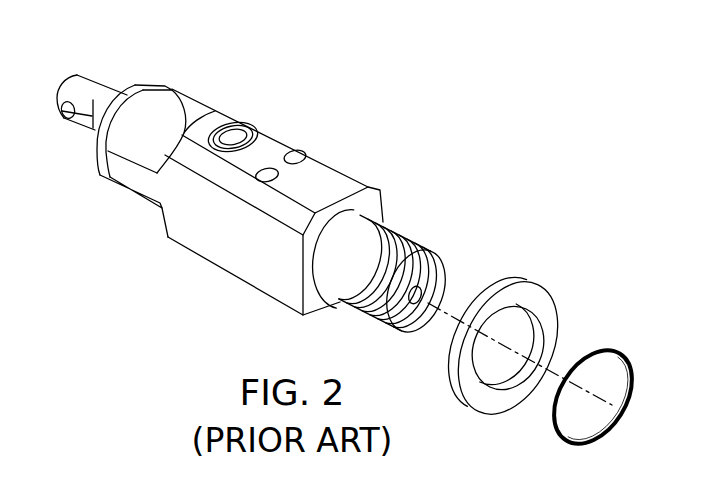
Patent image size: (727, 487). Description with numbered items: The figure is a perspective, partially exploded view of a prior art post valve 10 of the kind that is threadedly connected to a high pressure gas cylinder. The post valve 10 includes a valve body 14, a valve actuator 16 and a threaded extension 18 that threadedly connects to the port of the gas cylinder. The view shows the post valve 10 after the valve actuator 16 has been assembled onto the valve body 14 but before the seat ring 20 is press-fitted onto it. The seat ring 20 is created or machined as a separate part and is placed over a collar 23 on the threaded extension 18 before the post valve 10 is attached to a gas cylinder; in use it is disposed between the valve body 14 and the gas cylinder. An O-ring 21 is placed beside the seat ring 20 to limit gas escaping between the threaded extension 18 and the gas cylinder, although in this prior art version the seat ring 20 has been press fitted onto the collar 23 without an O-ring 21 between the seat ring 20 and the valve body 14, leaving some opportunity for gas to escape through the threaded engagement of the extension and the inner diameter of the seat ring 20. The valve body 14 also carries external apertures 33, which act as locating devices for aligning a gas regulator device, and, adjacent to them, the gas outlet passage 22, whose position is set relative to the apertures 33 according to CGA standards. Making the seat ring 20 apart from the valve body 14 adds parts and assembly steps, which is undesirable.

The post valve 10 is at (393, 83).
The valve body 14 is at (244, 114).
The valve actuator 16 is at (92, 78).
The threaded extension 18 is at (428, 246).
The seat ring 20 is at (530, 283).
The O-ring 21 is at (610, 350).
The gas outlet passage 22 is at (227, 136).
The collar 23 is at (361, 222).
The external apertures 33 is at (266, 168).